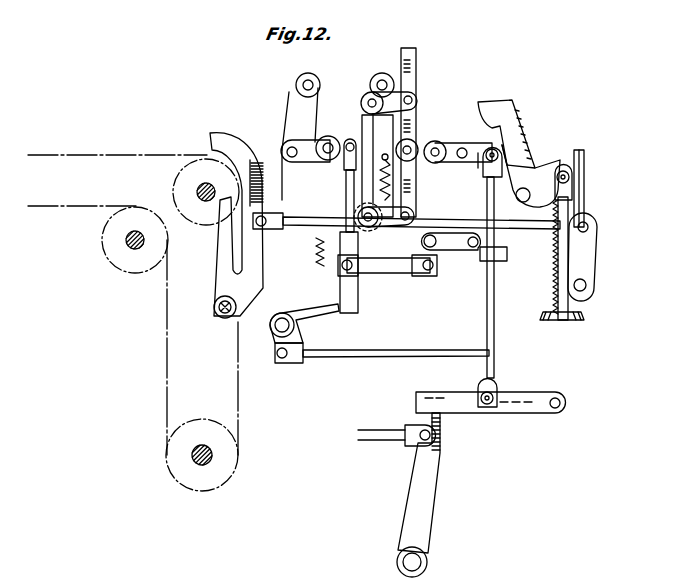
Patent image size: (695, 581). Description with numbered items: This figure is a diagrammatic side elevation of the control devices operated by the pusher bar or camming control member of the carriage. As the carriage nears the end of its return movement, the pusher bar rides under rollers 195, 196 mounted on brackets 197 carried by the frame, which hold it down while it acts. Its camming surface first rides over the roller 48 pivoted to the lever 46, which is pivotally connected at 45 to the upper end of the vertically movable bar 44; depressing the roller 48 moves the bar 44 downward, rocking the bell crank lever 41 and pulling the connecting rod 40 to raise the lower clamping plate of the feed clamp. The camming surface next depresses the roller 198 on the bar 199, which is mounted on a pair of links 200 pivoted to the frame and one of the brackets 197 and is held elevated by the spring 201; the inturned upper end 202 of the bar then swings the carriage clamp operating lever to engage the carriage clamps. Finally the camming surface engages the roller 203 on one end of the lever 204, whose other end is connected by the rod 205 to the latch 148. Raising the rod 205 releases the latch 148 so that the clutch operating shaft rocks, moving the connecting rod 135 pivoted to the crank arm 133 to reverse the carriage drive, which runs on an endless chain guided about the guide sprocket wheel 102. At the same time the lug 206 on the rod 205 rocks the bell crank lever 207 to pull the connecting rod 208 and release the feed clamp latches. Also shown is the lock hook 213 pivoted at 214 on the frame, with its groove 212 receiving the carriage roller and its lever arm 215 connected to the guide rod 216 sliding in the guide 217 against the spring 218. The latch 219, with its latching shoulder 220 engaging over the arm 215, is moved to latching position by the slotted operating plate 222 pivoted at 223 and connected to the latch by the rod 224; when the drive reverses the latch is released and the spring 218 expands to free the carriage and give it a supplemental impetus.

The connecting rod 40 is at (385, 357).
The bell crank lever 41 is at (298, 326).
The vertically movable bar 44 is at (346, 203).
The pivotal connection 45 is at (343, 171).
The lever 46 is at (302, 140).
The roller 48 is at (337, 132).
The guide sprocket wheel 102 is at (192, 420).
The crank arm 133 is at (422, 508).
The connecting rod 135 is at (380, 438).
The latch 148 is at (527, 392).
The roller 195 is at (300, 84).
The roller 196 is at (384, 74).
The bracket 197 is at (298, 122).
The roller 198 is at (420, 146).
The bar 199 is at (413, 84).
The links 200 is at (418, 95).
The spring 201 is at (395, 194).
The inturned upper end 202 is at (418, 52).
The roller 203 is at (440, 163).
The lever 204 is at (478, 204).
The rod 205 is at (496, 314).
The lug 206 is at (455, 248).
The bell crank lever 207 is at (437, 258).
The connecting rod 208 is at (382, 267).
The groove 212 is at (520, 118).
The lock hook 213 is at (542, 152).
The pivot 214 is at (570, 183).
The lever arm 215 is at (586, 165).
The guide rod 216 is at (577, 266).
The guide 217 is at (583, 318).
The spring 218 is at (571, 212).
The latch 219 is at (597, 247).
The latching shoulder 220 is at (584, 156).
The slotted operating plate 222 is at (222, 272).
The pivot 223 is at (221, 322).
The rod 224 is at (302, 223).